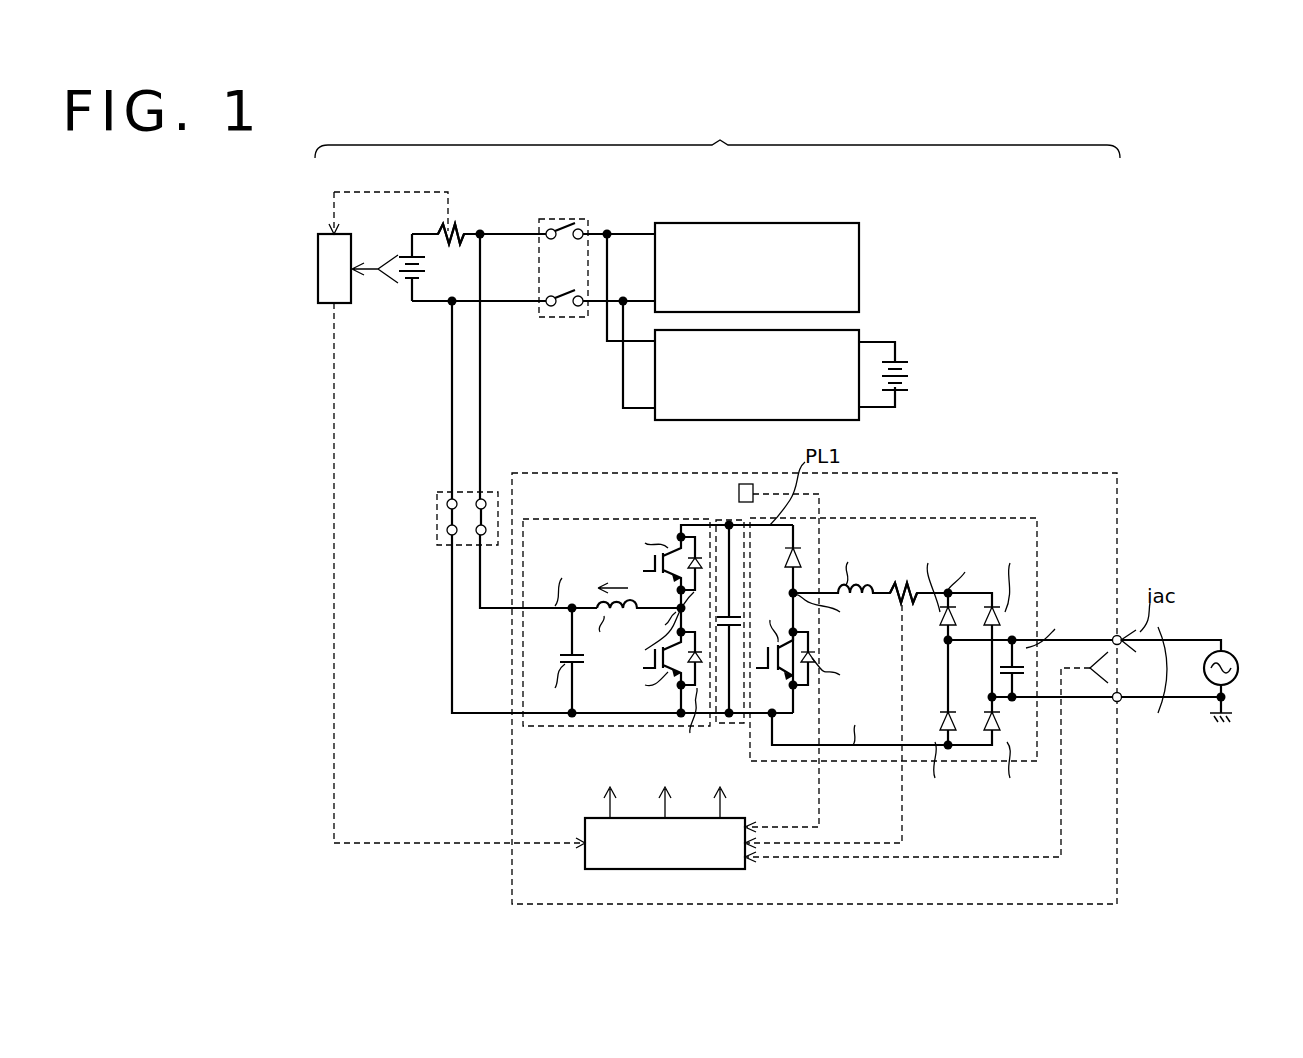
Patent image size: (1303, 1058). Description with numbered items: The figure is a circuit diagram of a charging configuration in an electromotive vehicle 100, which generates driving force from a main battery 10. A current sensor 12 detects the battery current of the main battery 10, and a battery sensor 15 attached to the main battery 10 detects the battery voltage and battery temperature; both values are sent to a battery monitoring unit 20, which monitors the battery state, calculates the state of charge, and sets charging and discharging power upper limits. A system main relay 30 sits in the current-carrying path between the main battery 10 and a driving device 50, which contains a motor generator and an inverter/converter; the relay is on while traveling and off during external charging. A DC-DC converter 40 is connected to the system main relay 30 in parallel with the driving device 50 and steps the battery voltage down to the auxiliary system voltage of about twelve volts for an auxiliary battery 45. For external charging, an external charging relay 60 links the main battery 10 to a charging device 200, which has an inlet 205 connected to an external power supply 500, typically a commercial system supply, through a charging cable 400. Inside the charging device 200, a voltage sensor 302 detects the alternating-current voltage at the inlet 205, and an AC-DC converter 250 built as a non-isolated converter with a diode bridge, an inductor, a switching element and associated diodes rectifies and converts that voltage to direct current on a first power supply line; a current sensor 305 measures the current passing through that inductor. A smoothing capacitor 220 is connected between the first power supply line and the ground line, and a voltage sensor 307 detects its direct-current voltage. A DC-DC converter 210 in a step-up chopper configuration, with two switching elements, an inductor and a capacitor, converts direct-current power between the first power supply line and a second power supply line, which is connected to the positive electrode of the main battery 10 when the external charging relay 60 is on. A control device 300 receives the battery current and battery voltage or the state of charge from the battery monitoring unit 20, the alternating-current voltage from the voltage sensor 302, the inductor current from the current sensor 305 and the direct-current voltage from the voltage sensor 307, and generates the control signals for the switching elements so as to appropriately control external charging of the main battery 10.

The electromotive vehicle 100 is at (717, 137).
The main battery 10 is at (410, 256).
The current sensor 12 is at (454, 230).
The battery sensor 15 is at (394, 282).
The battery monitoring unit 20 is at (318, 280).
The system main relay 30 is at (560, 219).
The DC-DC converter 40 is at (838, 421).
The auxiliary battery 45 is at (910, 374).
The driving device 50 is at (838, 223).
The external charging relay 60 is at (437, 520).
The charging device 200 is at (1075, 474).
The inlet 205 is at (1117, 636).
The DC-DC converter 210 is at (596, 516).
The smoothing capacitor 220 is at (722, 518).
The AC-DC converter 250 is at (985, 518).
The control device 300 is at (700, 870).
The voltage sensor 302 is at (1097, 680).
The current sensor 305 is at (895, 586).
The voltage sensor 307 is at (746, 484).
The charging cable 400 is at (1162, 713).
The external power supply 500 is at (1238, 656).